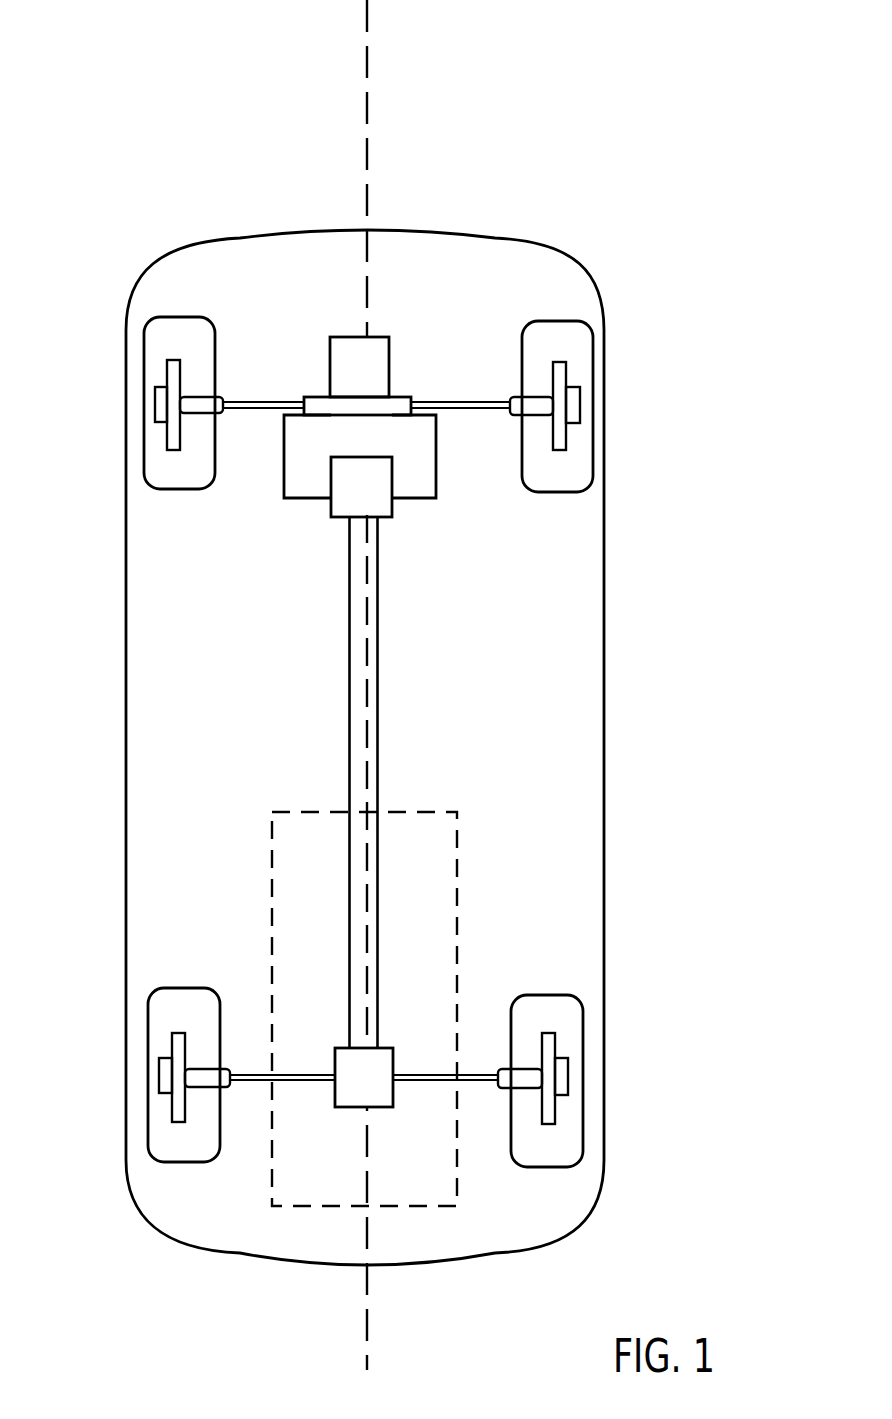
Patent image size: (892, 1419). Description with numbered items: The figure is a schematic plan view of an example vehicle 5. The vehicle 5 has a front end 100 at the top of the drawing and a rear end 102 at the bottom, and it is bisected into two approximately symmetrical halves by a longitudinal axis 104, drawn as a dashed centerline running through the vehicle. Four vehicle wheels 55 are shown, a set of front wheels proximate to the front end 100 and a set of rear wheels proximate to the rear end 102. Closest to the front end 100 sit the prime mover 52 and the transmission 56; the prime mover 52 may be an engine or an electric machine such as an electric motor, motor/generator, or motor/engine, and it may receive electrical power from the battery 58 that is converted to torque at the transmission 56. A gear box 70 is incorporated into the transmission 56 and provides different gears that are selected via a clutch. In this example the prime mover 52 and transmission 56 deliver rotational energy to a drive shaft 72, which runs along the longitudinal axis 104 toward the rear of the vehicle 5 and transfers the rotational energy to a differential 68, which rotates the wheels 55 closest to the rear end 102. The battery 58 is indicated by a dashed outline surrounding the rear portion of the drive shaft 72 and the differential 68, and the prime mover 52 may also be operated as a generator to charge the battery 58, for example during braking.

The vehicle 5 is at (692, 27).
The front end 100 is at (262, 166).
The rear end 102 is at (303, 1290).
The longitudinal axis 104 is at (367, 27).
The prime mover 52 is at (390, 358).
The vehicle wheels 55 is at (565, 459).
The transmission 56 is at (436, 457).
The battery 58 is at (412, 893).
The differential 68 is at (332, 1085).
The gear box 70 is at (377, 511).
The drive shaft 72 is at (378, 673).